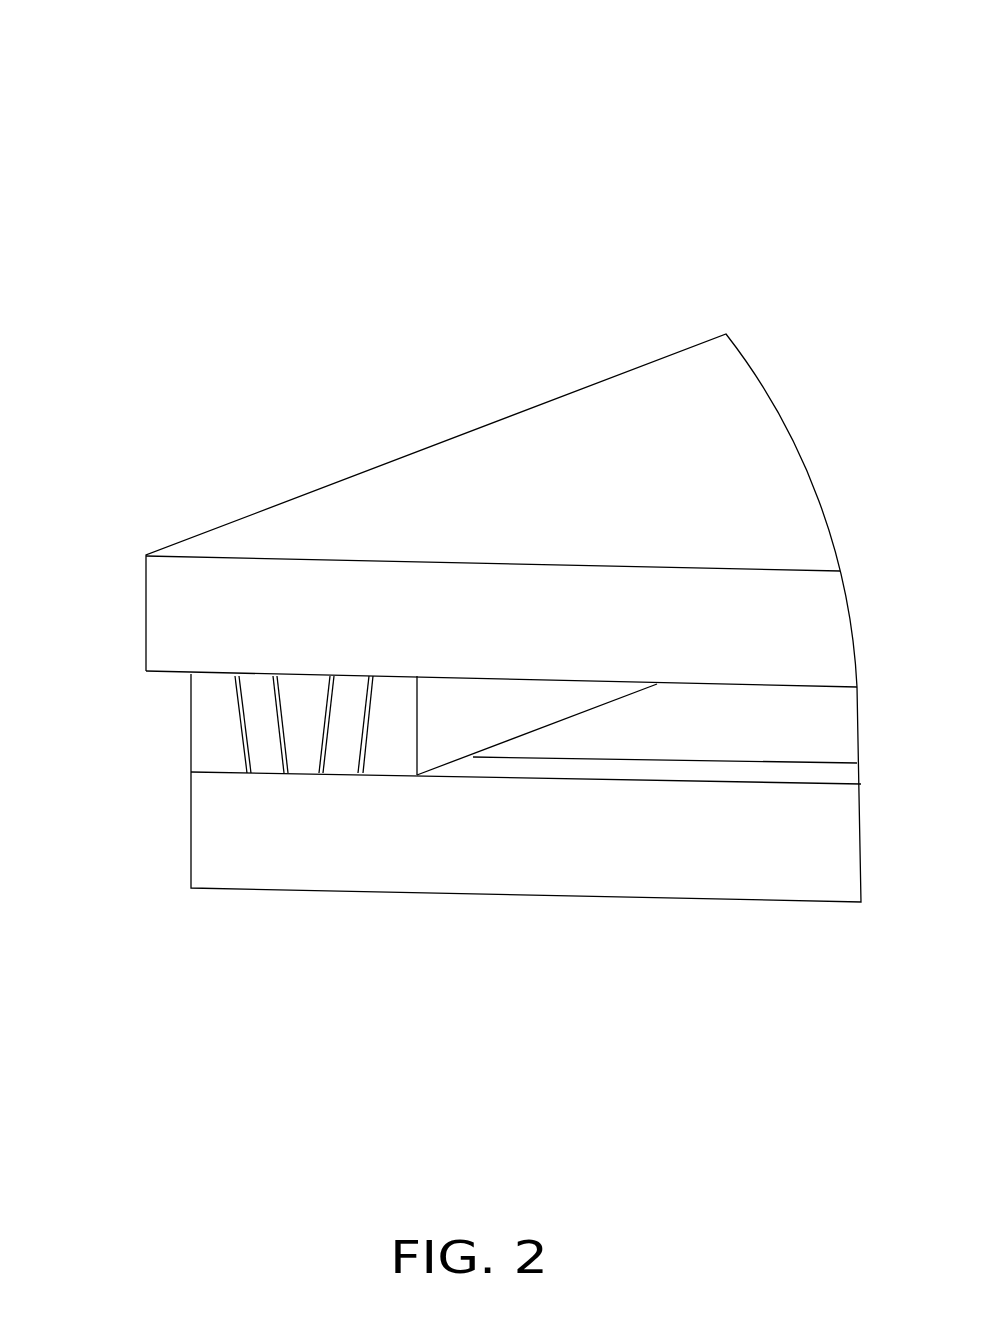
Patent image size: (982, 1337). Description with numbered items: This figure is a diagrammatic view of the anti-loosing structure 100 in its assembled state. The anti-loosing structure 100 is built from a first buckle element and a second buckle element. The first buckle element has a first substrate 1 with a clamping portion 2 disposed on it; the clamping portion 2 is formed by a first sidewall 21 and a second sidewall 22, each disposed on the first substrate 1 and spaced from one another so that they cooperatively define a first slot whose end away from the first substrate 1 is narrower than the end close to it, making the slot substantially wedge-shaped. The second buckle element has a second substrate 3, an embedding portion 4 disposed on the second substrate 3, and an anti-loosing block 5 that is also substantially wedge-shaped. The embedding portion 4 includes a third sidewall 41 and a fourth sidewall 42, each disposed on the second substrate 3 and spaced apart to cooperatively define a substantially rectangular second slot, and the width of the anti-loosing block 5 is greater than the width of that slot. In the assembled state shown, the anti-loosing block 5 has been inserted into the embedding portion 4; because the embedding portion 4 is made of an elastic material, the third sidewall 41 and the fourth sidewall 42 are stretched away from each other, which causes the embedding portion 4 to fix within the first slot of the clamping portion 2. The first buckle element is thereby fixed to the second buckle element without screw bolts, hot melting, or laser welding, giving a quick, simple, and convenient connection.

The anti-loosing structure 100 is at (490, 63).
The first substrate 1 is at (174, 608).
The clamping portion 2 is at (408, 362).
The first sidewall 21 is at (227, 694).
The second sidewall 22 is at (388, 698).
The second substrate 3 is at (348, 848).
The embedding portion 4 is at (103, 778).
The third sidewall 41 is at (260, 747).
The fourth sidewall 42 is at (338, 753).
The anti-loosing block 5 is at (297, 701).